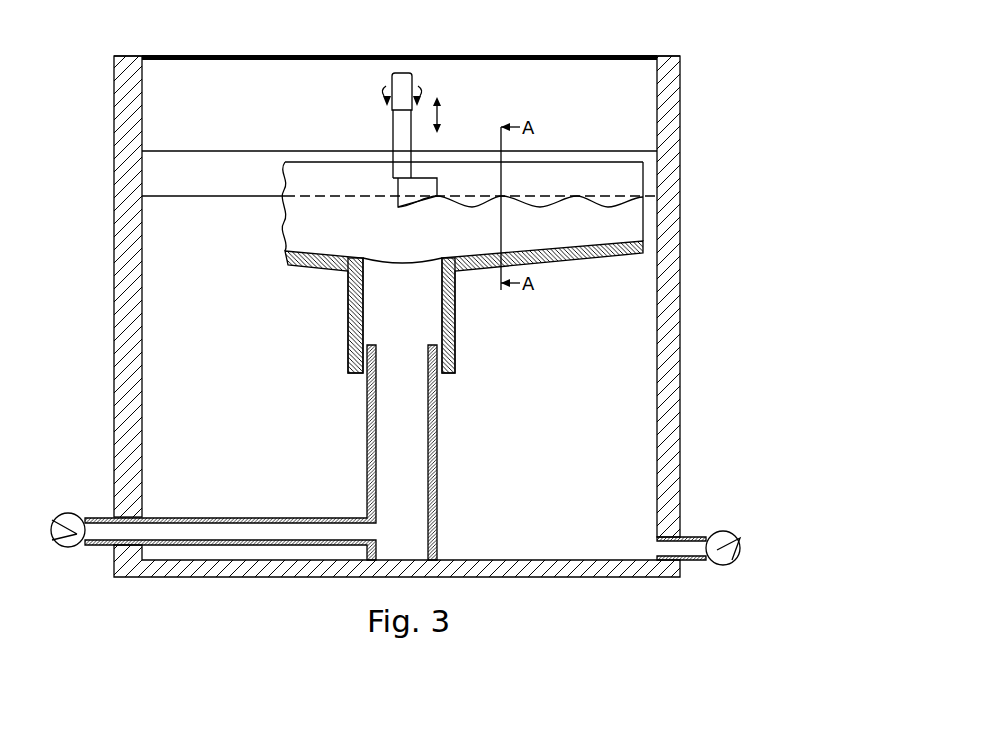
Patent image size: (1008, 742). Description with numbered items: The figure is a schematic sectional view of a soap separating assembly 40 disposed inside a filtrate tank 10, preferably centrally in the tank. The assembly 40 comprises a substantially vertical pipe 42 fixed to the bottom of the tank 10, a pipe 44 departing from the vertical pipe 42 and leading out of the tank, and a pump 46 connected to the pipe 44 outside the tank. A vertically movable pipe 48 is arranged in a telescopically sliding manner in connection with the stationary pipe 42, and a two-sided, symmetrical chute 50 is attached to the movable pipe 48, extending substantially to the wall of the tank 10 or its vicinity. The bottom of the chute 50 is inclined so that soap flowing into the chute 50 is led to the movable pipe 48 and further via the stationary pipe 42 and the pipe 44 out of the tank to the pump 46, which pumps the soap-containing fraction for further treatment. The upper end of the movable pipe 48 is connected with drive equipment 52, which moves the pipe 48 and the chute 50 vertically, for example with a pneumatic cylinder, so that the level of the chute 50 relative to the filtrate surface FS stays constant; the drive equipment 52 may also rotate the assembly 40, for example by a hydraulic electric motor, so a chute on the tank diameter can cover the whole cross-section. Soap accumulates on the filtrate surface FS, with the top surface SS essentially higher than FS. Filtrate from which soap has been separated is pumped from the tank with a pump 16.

The filtrate tank 10 is at (686, 88).
The pump 16 is at (745, 545).
The soap separating assembly 40 is at (562, 80).
The vertical pipe 42 is at (438, 495).
The pipe 44 is at (112, 526).
The pump 46 is at (70, 513).
The movable pipe 48 is at (452, 350).
The chute 50 is at (535, 237).
The drive equipment 52 is at (480, 52).